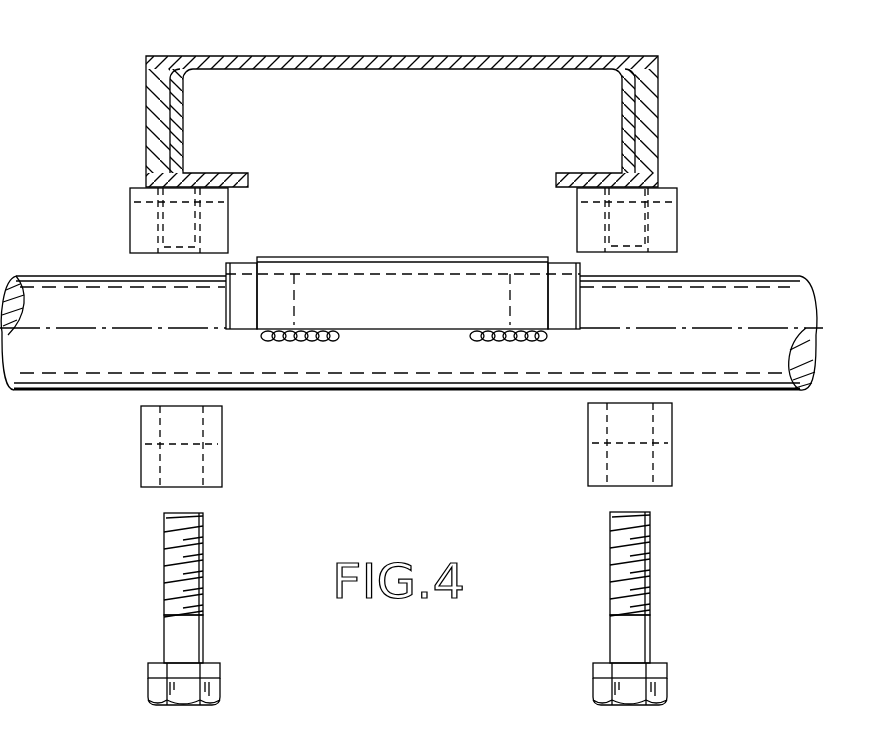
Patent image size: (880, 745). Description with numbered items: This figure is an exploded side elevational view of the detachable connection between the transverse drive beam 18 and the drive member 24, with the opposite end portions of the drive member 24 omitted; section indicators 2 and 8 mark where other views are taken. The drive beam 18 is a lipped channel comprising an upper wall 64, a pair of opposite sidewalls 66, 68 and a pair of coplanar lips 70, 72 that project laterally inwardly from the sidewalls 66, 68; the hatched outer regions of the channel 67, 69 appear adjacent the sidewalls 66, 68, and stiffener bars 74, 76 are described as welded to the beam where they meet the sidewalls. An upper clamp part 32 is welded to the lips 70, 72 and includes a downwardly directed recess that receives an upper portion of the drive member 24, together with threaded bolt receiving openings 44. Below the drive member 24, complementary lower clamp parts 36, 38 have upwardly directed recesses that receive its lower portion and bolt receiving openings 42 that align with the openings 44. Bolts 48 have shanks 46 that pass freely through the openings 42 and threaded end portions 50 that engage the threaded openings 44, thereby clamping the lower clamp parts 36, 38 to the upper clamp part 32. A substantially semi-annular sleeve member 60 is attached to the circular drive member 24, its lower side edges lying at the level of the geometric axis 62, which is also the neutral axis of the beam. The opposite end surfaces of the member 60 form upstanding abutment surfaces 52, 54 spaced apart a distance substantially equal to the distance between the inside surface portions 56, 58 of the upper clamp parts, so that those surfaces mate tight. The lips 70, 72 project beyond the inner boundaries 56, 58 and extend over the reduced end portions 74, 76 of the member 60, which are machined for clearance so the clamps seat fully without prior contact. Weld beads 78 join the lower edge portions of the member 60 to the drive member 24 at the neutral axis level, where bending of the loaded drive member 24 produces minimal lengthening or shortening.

The section line 2- 2 is at (13, 45).
The section line 8- 8 is at (70, 258).
The transverse drive beam 18 is at (403, 96).
The drive member 24 is at (411, 350).
The upper clamp part 32 is at (404, 249).
The lower clamp part 36 is at (150, 466).
The lower clamp part 38 is at (665, 467).
The bolt receiving opening 42 is at (195, 468).
The bolt receiving opening 44 is at (643, 245).
The shank 46 is at (197, 643).
The bolt 48 is at (404, 608).
The threaded end portion 50 is at (203, 552).
The abutment surface 52 is at (225, 300).
The abutment surface 54 is at (581, 306).
The inside surface portion 56 is at (228, 232).
The inside surface portion 58 is at (577, 232).
The member 60 is at (404, 341).
The geometric axis 62 is at (60, 329).
The upper wall 64 is at (292, 55).
The sidewall 66 is at (176, 120).
The left flange 67 is at (146, 114).
The sidewall 68 is at (622, 105).
The right flange 69 is at (658, 108).
The lip 70 is at (203, 174).
The lip 72 is at (556, 180).
The stiffener bar 74 is at (243, 316).
The stiffener bar 76 is at (560, 312).
The weld bead 78 is at (313, 343).